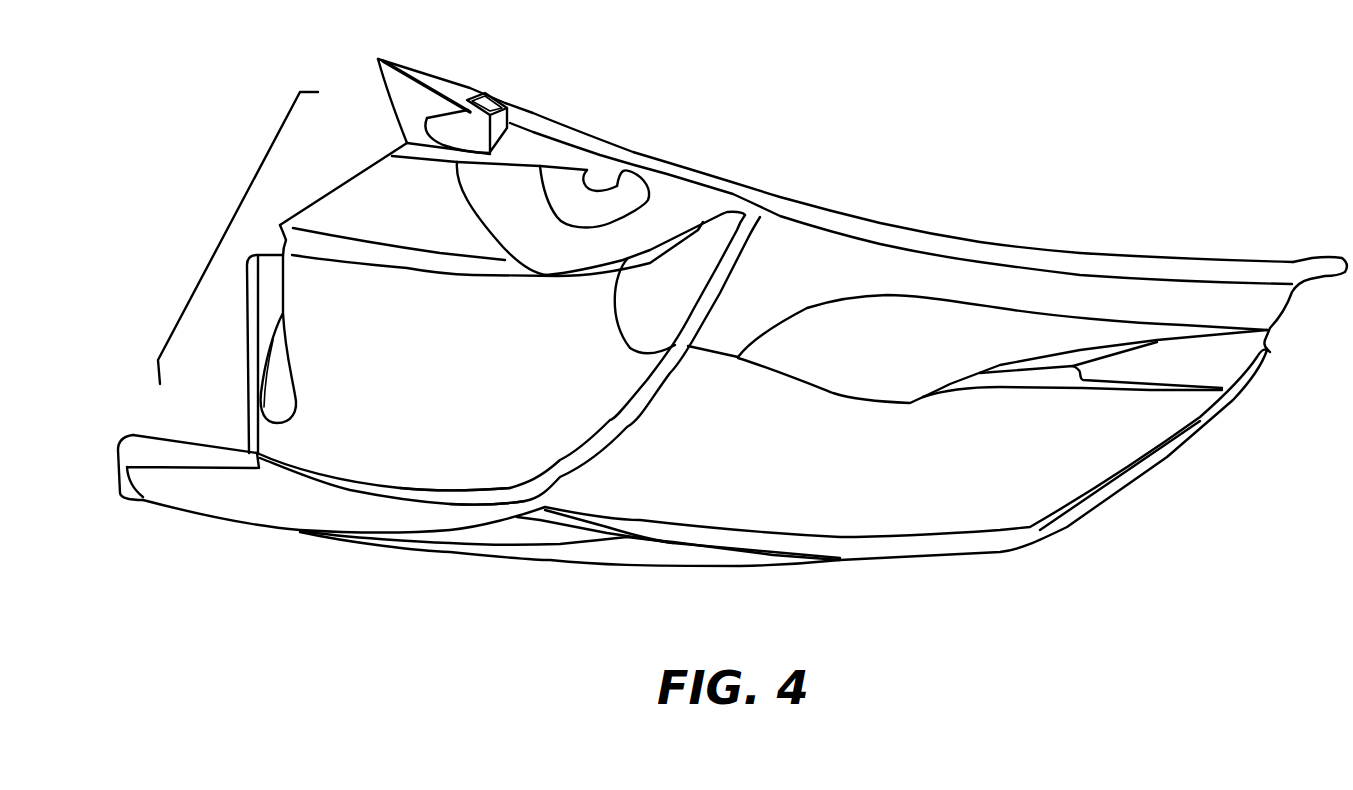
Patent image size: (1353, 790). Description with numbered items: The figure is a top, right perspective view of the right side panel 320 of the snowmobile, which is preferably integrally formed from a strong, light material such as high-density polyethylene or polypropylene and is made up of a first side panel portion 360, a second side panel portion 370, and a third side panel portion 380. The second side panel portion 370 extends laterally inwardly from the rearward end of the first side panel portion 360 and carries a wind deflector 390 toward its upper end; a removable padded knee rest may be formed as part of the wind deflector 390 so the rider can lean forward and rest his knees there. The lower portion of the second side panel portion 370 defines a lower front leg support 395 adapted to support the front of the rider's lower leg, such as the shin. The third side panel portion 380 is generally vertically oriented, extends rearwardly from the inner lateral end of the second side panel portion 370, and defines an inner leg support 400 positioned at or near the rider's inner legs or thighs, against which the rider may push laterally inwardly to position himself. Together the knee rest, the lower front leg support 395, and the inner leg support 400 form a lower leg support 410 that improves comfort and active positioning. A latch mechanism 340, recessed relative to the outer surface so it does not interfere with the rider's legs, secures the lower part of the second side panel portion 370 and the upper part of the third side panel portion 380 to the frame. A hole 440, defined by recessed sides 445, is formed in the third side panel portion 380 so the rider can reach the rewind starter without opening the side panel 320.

The right side panel 320 is at (1060, 578).
The latch mechanism 340 is at (492, 108).
The first side panel portion 360 is at (885, 495).
The second side panel portion 370 is at (488, 410).
The third side panel portion 380 is at (443, 203).
The wind deflector 390 is at (698, 260).
The lower front leg support 395 is at (445, 397).
The inner leg support 400 is at (417, 214).
The lower leg support 410 is at (222, 233).
The hole 440 is at (605, 190).
The sides 445 is at (541, 222).